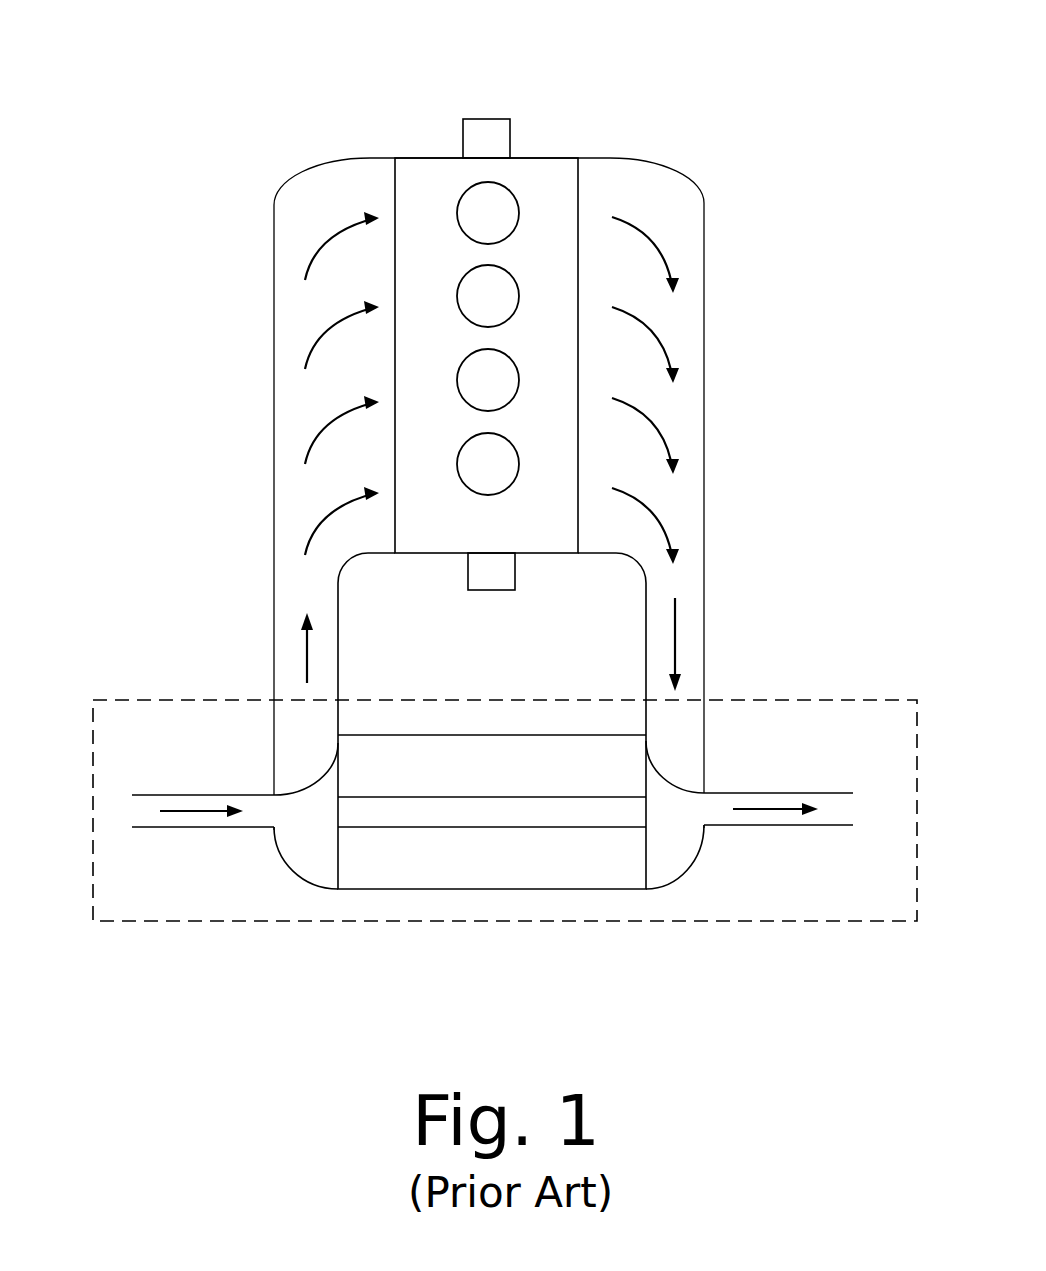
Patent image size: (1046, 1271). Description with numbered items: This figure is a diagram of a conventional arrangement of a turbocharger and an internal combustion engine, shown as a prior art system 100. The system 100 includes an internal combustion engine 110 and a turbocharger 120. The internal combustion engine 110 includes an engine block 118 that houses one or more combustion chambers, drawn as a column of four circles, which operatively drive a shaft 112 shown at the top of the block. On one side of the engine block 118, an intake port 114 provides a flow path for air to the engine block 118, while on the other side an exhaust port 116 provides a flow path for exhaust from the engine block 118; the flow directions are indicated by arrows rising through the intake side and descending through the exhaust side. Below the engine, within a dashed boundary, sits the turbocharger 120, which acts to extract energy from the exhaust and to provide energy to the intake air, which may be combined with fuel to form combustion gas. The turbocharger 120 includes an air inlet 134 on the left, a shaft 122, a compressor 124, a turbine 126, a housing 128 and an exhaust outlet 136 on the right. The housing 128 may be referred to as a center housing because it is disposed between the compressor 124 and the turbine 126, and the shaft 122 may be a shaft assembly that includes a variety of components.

The prior art system 100 is at (697, 56).
The internal combustion engine 110 is at (440, 156).
The shaft 112 is at (490, 119).
The intake port 114 is at (294, 182).
The exhaust port 116 is at (699, 195).
The engine block 118 is at (516, 543).
The turbocharger 120 is at (780, 698).
The shaft 122 is at (490, 828).
The compressor 124 is at (314, 840).
The turbine 126 is at (676, 836).
The housing 128 is at (518, 779).
The air inlet 134 is at (228, 795).
The exhaust outlet 136 is at (785, 793).